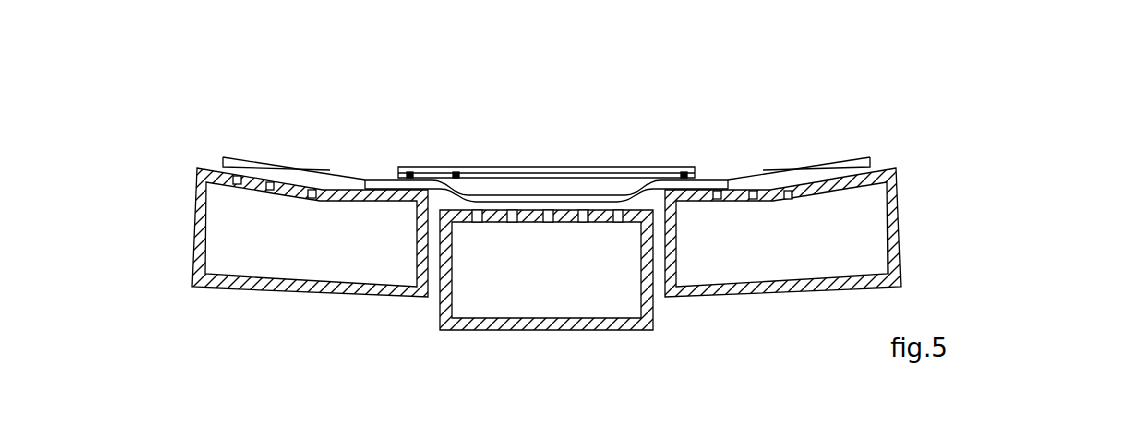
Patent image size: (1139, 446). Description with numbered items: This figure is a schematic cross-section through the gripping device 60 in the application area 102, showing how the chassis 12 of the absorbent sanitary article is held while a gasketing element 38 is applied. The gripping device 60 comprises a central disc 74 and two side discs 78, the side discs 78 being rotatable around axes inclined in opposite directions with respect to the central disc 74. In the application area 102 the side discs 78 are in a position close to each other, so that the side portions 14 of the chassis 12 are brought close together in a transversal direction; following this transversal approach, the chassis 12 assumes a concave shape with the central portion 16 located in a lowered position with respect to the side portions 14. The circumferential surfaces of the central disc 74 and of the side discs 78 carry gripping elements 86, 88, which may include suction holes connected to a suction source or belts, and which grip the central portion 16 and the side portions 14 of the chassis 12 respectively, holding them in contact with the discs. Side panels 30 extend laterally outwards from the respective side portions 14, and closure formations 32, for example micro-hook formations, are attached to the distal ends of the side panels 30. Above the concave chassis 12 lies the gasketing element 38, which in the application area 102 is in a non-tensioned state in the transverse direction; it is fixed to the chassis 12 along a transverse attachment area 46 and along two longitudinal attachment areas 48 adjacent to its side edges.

The chassis 12 is at (588, 194).
The side portions 14 is at (545, 130).
The central portion 16 is at (563, 202).
The side panels 30 is at (345, 177).
The closure formations 32 is at (242, 160).
The gasketing element 38 is at (546, 116).
The transverse attachment area 46 is at (456, 174).
The longitudinal attachment areas 48 is at (410, 174).
The gripping device 60 is at (988, 78).
The central disc 74 is at (483, 331).
The side discs 78 is at (192, 247).
The gripping elements 86 is at (582, 222).
The gripping elements 88 is at (312, 200).
The application area 102 is at (618, 128).